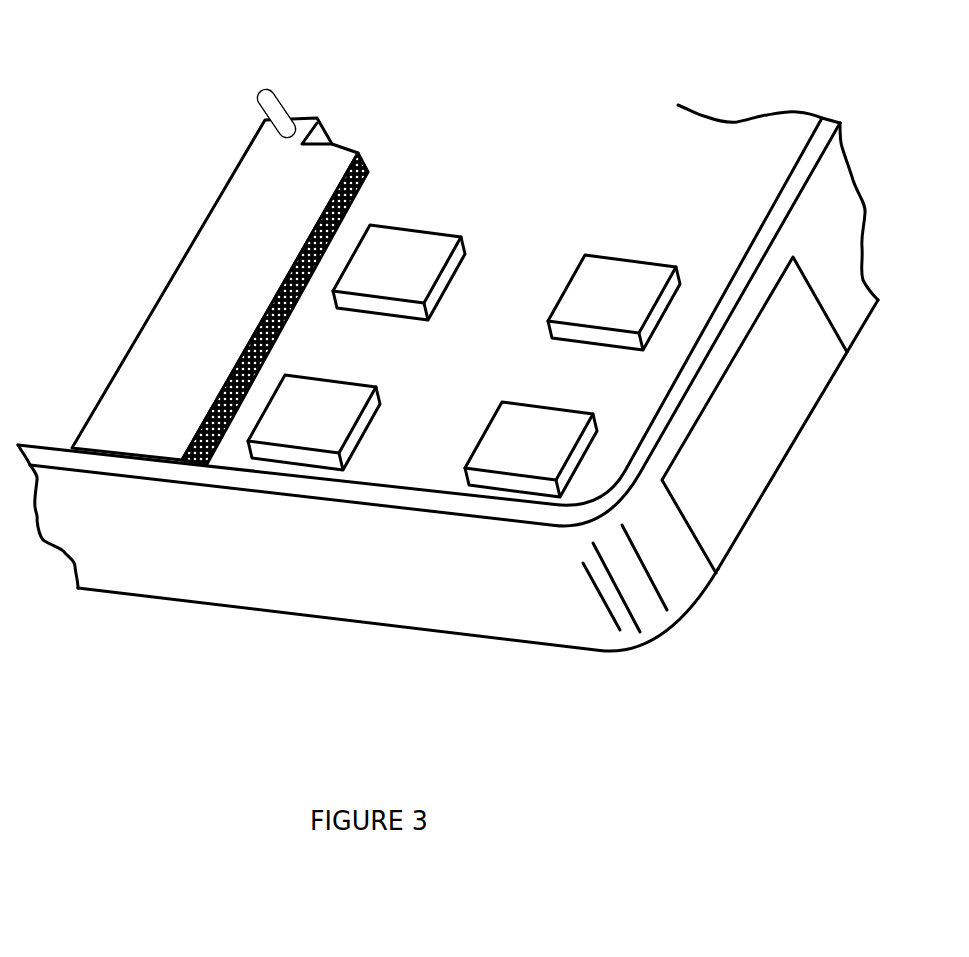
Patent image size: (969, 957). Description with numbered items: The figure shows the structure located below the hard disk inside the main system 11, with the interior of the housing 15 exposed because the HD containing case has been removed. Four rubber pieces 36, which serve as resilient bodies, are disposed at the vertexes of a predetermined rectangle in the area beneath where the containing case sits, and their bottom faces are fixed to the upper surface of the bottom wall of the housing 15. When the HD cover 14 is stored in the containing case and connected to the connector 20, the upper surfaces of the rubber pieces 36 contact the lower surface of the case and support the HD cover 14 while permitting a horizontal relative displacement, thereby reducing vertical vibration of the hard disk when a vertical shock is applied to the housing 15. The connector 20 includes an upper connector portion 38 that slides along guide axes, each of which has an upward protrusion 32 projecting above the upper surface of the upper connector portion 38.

The main system 11 is at (448, 417).
The HD cover 14 is at (770, 433).
The housing 15 is at (412, 597).
The connector 20 is at (217, 235).
The upward protrusion 32 is at (272, 88).
The rubber pieces 36 is at (420, 247).
The upper connector portion 38 is at (247, 205).